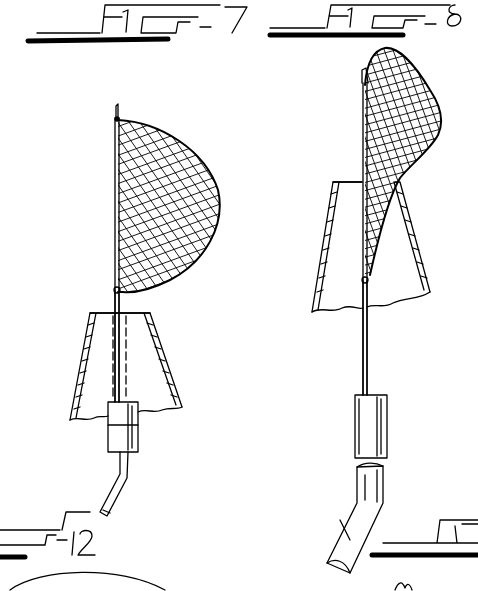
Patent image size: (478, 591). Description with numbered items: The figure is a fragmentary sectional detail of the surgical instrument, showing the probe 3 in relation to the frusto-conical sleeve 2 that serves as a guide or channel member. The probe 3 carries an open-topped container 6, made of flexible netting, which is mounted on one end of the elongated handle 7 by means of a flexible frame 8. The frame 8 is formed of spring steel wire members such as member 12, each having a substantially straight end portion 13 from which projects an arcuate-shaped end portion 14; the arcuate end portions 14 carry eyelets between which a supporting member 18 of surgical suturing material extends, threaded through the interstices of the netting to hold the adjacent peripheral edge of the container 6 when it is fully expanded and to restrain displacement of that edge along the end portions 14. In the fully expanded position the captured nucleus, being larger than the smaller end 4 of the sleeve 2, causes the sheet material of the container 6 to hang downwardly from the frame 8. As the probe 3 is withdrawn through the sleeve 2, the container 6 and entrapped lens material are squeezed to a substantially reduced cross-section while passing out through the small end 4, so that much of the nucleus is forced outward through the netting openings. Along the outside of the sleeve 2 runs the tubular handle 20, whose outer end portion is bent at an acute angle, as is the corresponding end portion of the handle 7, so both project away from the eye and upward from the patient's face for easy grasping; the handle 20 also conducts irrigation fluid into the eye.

In FIG. 7, the sleeve 2 is at (179, 376).
In FIG. 8, the sleeve 2 is at (412, 238).
In FIG. 7, the probe 3 is at (132, 443).
In FIG. 8, the probe 3 is at (383, 492).
In FIG. 7, the smaller end 4 is at (150, 313).
In FIG. 8, the smaller end 4 is at (333, 182).
In FIG. 7, the container 6 is at (211, 170).
In FIG. 8, the container 6 is at (442, 100).
In FIG. 7, the handle 7 is at (138, 425).
In FIG. 7, the flexible frame 8 is at (114, 263).
In FIG. 8, the flexible frame 8 is at (368, 356).
In FIG. 7, the elongated member 12 is at (128, 340).
In FIG. 7, the straight end portion 13 is at (113, 362).
In FIG. 7, the arcuate-shaped end portion 14 is at (114, 194).
In FIG. 8, the arcuate-shaped end portion 14 is at (363, 150).
In FIG. 7, the supporting member 18 is at (119, 109).
In FIG. 8, the supporting member 18 is at (362, 83).
In FIG. 7, the handle 20 is at (118, 496).